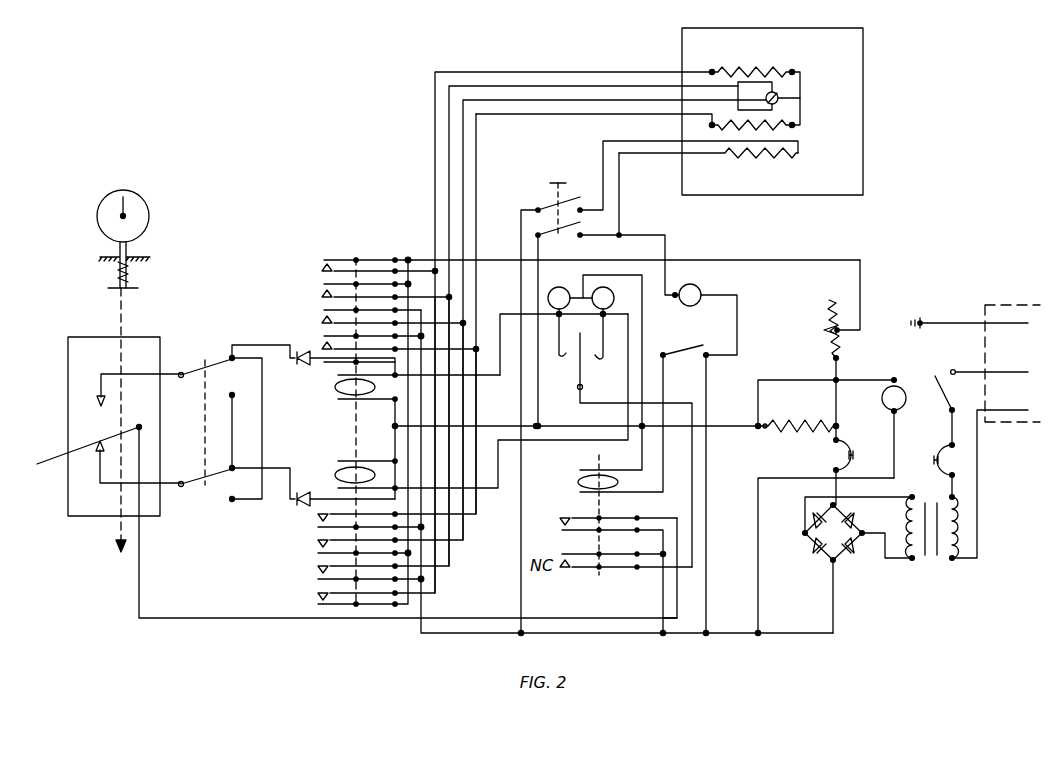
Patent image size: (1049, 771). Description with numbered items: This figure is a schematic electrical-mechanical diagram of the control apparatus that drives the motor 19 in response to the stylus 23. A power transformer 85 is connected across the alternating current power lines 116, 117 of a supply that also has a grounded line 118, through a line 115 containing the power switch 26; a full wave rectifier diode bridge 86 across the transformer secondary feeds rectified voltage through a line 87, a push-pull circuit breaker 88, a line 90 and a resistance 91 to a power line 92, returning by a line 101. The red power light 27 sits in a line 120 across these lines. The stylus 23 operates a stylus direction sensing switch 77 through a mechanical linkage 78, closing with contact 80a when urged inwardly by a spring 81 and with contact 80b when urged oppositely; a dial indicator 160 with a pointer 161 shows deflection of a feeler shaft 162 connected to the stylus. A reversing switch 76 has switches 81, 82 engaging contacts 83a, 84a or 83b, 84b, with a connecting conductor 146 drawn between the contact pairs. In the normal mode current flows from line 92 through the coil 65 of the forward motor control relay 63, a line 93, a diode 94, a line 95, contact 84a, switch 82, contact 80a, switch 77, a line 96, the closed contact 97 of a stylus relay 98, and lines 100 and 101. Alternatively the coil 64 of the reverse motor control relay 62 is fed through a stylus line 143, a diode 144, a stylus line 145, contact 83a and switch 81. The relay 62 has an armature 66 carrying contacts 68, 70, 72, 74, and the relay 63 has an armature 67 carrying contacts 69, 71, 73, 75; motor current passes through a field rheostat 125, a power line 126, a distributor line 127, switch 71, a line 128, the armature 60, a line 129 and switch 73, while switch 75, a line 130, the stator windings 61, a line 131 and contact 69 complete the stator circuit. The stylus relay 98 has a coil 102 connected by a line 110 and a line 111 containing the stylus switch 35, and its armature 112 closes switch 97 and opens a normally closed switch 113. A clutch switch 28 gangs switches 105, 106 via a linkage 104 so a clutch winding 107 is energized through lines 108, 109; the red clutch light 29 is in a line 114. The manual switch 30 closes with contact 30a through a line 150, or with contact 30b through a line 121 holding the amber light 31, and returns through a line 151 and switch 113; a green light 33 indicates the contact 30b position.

The motor 19 is at (866, 72).
The stylus 23 is at (114, 546).
The power switch 26 is at (945, 382).
The red power light 27 is at (900, 406).
The clutch switch 28 is at (556, 183).
The red clutch light 29 is at (700, 288).
The manual direction switch 30 is at (578, 362).
The contact 30a is at (601, 357).
The contact 30b is at (562, 342).
The amber light 31 is at (614, 298).
The green light 33 is at (548, 292).
The stylus switch 35 is at (700, 348).
The armature 60 is at (780, 95).
The stator windings 61 is at (764, 68).
The reverse motor control relay 62 is at (302, 262).
The normal forward motor control relay 63 is at (297, 571).
The coil 64 is at (338, 396).
The coil 65 is at (340, 461).
The movable armature 66 is at (320, 349).
The movable armature 67 is at (318, 514).
The contact 68 is at (320, 323).
The contact 69 is at (318, 540).
The contact 70 is at (320, 309).
The contact 71 is at (318, 566).
The contact 72 is at (320, 283).
The contact 73 is at (318, 593).
The contact 74 is at (322, 258).
The contact 75 is at (322, 606).
The reversing switch 76 is at (226, 338).
The stylus direction sensing switch 77 is at (50, 457).
The mechanical linkage 78 is at (124, 316).
The contact 80a is at (95, 449).
The contact 80b is at (92, 400).
The switch 81 is at (130, 275).
The switch 82 is at (196, 482).
The contact 83a is at (230, 358).
The contact 83b is at (230, 394).
The contact 84a is at (230, 468).
The contact 84b is at (230, 499).
The power transformer 85 is at (934, 563).
The full wave rectifier diode bridge 86 is at (835, 545).
The line 87 is at (830, 478).
The push-pull circuit breaker 88 is at (850, 452).
The line 90 is at (836, 392).
The resistance 91 is at (796, 426).
The power line 92 is at (722, 426).
The line 93 is at (318, 490).
The diode 94 is at (268, 499).
The line 95 is at (264, 468).
The line 96 is at (225, 612).
The contact 97 is at (580, 532).
The stylus relay 98 is at (568, 471).
The line 100 is at (664, 612).
The line 101 is at (780, 634).
The coil 102 is at (588, 492).
The mechanical linkage 104 is at (556, 200).
The switch 105 is at (580, 184).
The switch 106 is at (565, 228).
The winding 107 is at (770, 157).
The line 108 is at (536, 250).
The line 109 is at (520, 603).
The line 110 is at (640, 466).
The line 111 is at (704, 588).
The armature 112 is at (600, 504).
The switch 113 is at (566, 554).
The line 114 is at (737, 322).
The line 115 is at (950, 436).
The power line 116 is at (1003, 372).
The power line 117 is at (1008, 410).
The grounded line 118 is at (950, 323).
The line 120 is at (758, 616).
The line 121 is at (480, 490).
The motor speed regulating field rheostat 125 is at (830, 346).
The motor speed control power line 126 is at (818, 260).
The power distributor line 127 is at (412, 600).
The motor armature winding line 128 is at (463, 536).
The motor armature winding line 129 is at (450, 560).
The line 130 is at (440, 580).
The line 131 is at (583, 114).
The stylus line 143 is at (342, 375).
The diode 144 is at (305, 364).
The stylus line 145 is at (285, 347).
The conductor 146 is at (262, 418).
The line 150 is at (518, 315).
The line 151 is at (690, 514).
The dial indicator 160 is at (150, 222).
The pointer 161 is at (128, 202).
The feeler shaft 162 is at (128, 255).